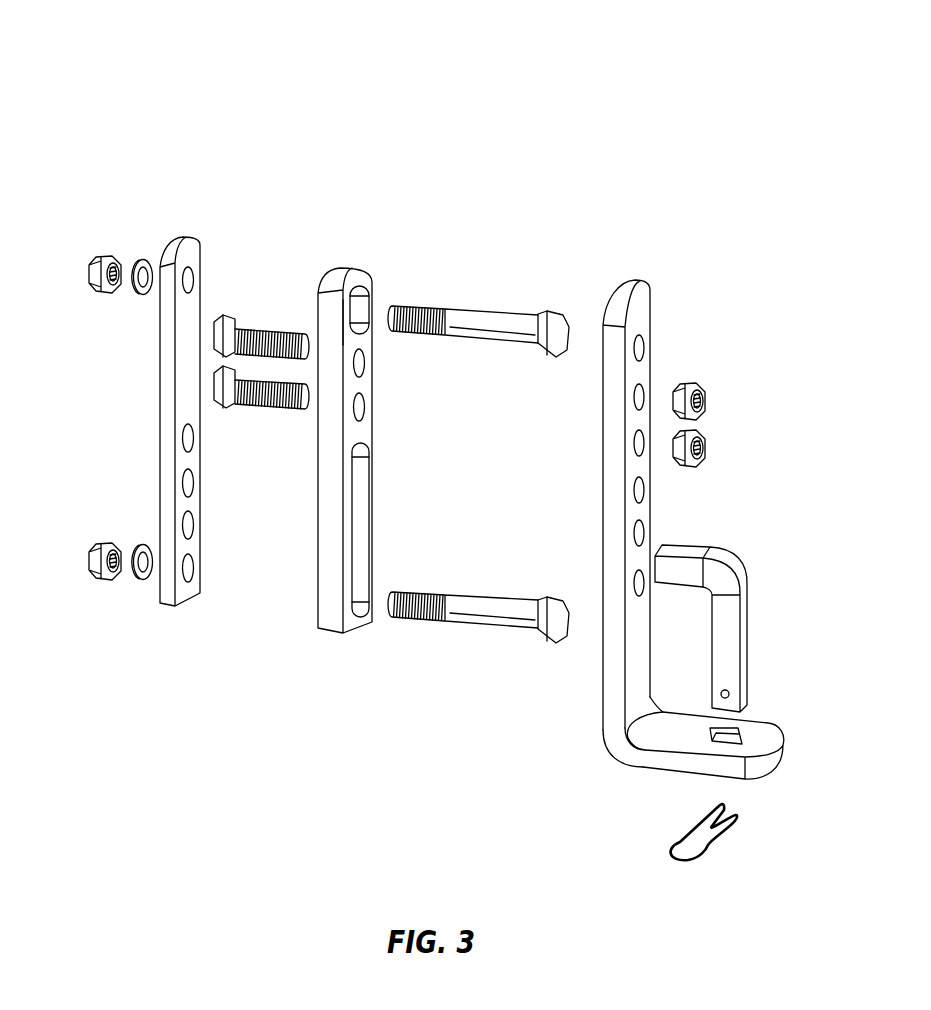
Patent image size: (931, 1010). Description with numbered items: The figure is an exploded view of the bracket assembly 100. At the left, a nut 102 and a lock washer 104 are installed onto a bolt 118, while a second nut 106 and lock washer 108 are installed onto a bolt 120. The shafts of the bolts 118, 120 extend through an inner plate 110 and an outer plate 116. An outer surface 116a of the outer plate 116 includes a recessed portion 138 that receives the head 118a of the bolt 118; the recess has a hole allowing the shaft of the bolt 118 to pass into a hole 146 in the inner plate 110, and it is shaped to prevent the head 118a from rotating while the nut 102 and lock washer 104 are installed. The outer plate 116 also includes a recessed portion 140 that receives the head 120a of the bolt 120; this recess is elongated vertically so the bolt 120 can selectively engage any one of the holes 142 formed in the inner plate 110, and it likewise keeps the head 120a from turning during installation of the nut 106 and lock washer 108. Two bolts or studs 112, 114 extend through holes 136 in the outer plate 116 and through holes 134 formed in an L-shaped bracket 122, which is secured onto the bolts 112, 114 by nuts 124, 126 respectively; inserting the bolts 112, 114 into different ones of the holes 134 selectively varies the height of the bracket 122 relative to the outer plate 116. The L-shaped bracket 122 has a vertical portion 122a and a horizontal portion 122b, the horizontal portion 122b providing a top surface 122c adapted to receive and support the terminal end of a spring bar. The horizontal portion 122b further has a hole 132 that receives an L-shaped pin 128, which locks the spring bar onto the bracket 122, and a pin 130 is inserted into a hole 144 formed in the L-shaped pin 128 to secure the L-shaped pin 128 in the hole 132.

The bracket assembly 100 is at (190, 105).
The nut 102 is at (97, 251).
The lock washer 104 is at (141, 257).
The nut 106 is at (96, 580).
The lock washer 108 is at (142, 583).
The inner plate 110 is at (173, 383).
The bolt 112 is at (270, 326).
The bolt 114 is at (266, 410).
The outer plate 116 is at (381, 412).
The outer surface 116a is at (364, 334).
The bolt 118 is at (485, 295).
The head 118a is at (556, 312).
The bolt 120 is at (478, 654).
The head 120a is at (550, 644).
The L-shaped bracket 122 is at (672, 520).
The vertical portion 122a is at (622, 501).
The horizontal portion 122b is at (719, 758).
The top surface 122c is at (667, 737).
The nut 124 is at (702, 388).
The nut 126 is at (704, 446).
The L-shaped pin 128 is at (736, 610).
The pin 130 is at (712, 846).
The hole 132 is at (743, 733).
The holes 134 is at (647, 437).
The holes 136 is at (377, 344).
The recessed portion 138 is at (361, 306).
The recessed portion 140 is at (360, 510).
The holes 142 is at (207, 423).
The hole 144 is at (730, 692).
The hole 146 is at (187, 294).